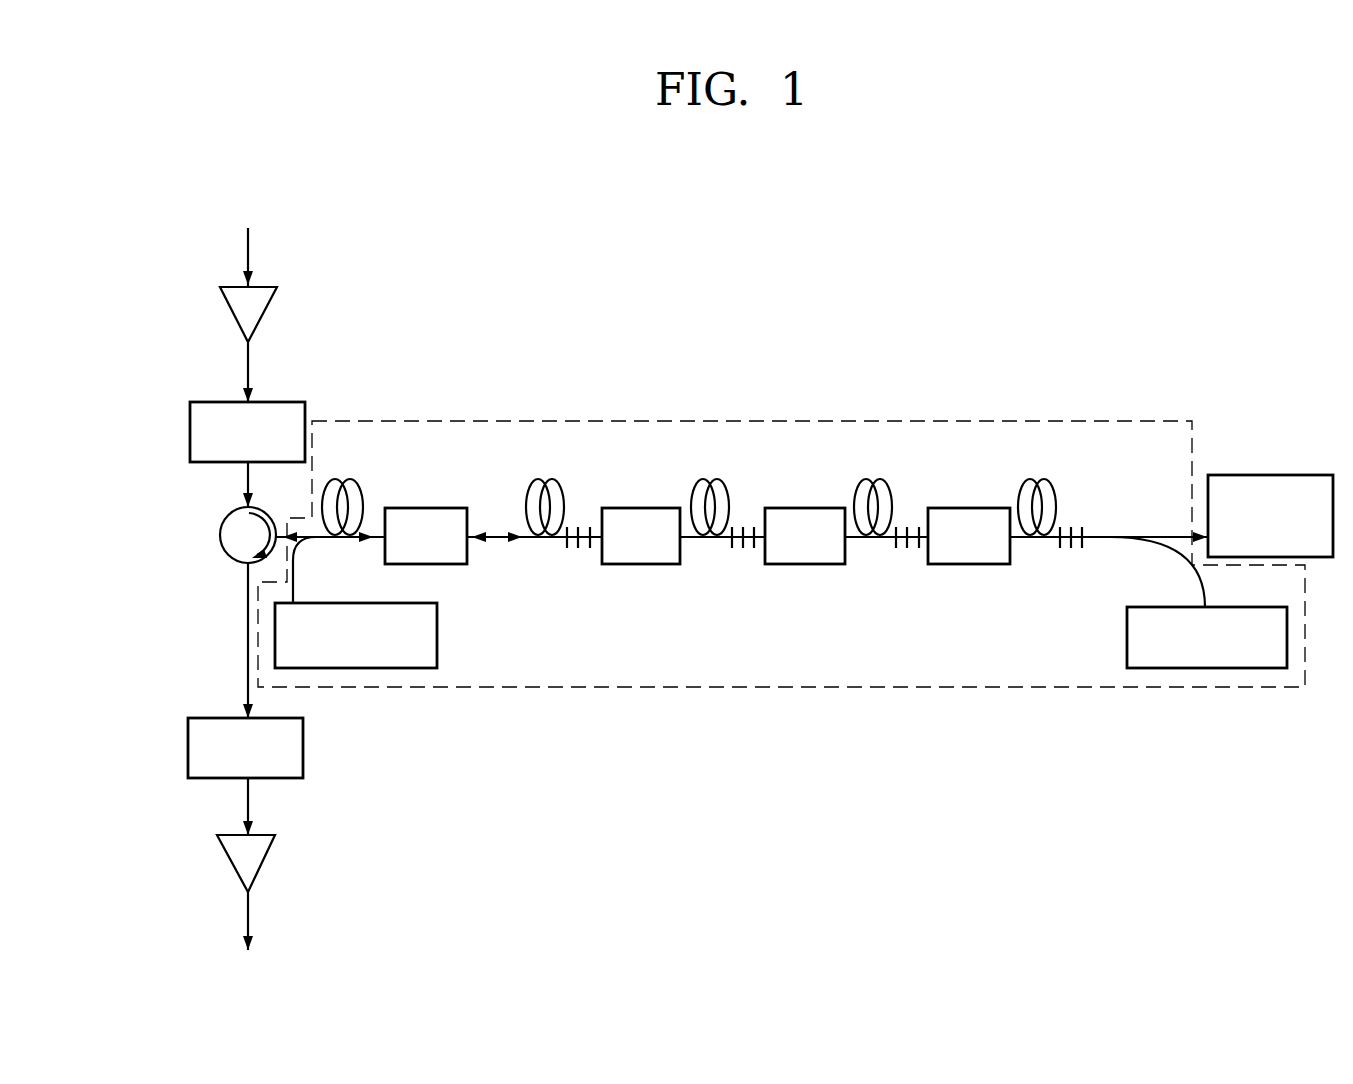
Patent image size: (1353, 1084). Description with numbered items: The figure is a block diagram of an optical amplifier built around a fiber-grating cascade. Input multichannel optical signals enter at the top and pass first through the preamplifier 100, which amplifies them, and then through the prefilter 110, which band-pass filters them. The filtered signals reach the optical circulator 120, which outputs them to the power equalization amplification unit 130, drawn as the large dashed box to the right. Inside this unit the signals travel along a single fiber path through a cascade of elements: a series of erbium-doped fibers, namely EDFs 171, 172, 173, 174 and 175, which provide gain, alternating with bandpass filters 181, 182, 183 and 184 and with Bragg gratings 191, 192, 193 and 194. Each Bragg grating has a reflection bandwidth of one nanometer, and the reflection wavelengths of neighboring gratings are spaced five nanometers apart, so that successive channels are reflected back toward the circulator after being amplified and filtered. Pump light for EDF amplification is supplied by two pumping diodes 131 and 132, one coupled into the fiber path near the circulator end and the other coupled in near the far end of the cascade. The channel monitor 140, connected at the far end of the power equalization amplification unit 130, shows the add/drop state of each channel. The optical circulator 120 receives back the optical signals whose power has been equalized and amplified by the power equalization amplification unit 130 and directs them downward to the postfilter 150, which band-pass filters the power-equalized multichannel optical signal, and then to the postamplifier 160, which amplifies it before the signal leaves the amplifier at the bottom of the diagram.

The preamplifier 100 is at (262, 312).
The prefilter 110 is at (283, 402).
The optical circulator 120 is at (218, 531).
The power equalization amplification unit 130 is at (697, 419).
The pumping diode 131 is at (437, 640).
The pumping diode 132 is at (1125, 641).
The channel monitor 140 is at (1243, 473).
The postfilter 150 is at (305, 748).
The postamplifier 160 is at (262, 860).
The EDF 171 is at (364, 490).
The EDF 172 is at (562, 498).
The EDF 173 is at (727, 498).
The EDF 174 is at (892, 498).
The EDF 175 is at (1056, 496).
The bandpass filter 181 is at (452, 506).
The bandpass filter 182 is at (637, 506).
The bandpass filter 183 is at (800, 506).
The bandpass filter 184 is at (965, 506).
The Bragg grating 191 is at (578, 560).
The Bragg grating 192 is at (738, 552).
The Bragg grating 193 is at (905, 552).
The Bragg grating 194 is at (1058, 552).